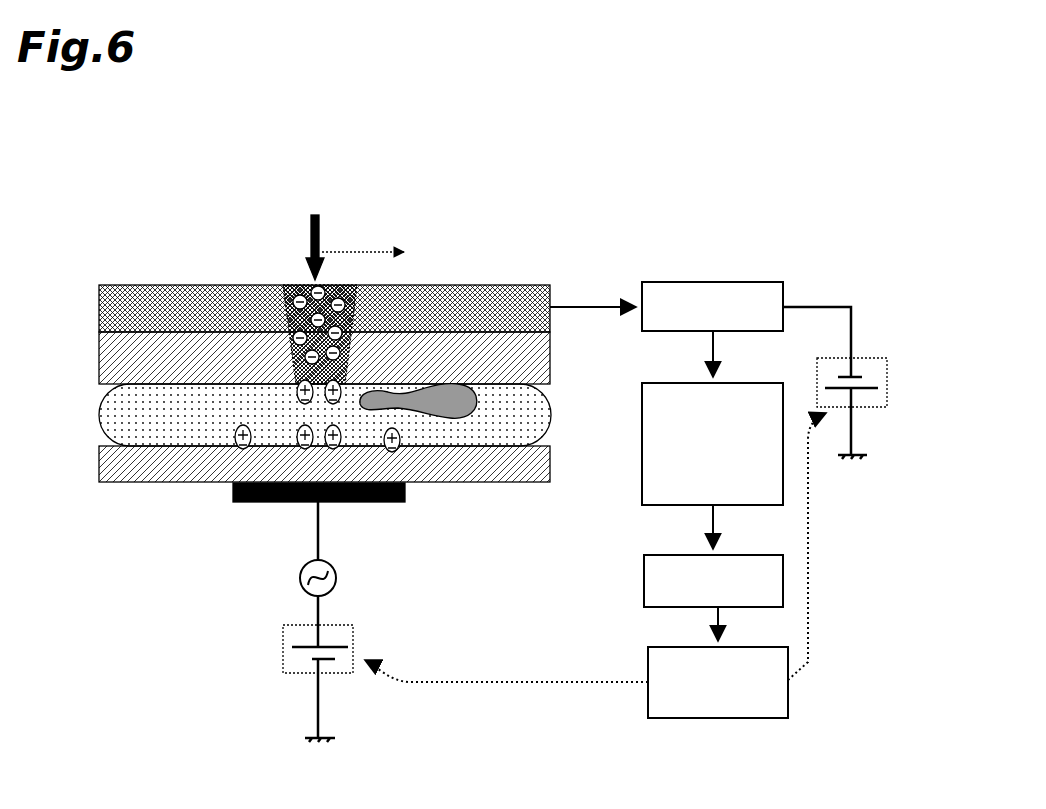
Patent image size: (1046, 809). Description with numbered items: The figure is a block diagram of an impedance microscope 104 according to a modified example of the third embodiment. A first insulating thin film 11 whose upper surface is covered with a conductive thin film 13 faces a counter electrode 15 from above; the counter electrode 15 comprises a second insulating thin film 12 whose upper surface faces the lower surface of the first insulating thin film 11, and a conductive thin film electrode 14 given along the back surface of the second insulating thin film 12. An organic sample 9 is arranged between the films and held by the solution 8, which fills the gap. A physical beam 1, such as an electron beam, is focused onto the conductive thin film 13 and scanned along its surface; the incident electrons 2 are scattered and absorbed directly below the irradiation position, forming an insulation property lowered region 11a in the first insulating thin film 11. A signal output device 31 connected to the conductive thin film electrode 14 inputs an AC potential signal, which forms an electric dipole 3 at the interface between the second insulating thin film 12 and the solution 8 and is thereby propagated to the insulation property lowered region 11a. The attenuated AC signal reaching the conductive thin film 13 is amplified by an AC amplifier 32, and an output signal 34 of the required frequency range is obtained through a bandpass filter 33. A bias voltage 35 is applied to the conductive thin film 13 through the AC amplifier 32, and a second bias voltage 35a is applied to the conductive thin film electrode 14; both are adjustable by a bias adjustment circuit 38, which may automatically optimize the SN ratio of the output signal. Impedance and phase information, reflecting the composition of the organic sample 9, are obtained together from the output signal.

The physical beam 1 is at (310, 245).
The incident electrons 2 is at (297, 296).
The electric dipole 3 is at (393, 454).
The solution 8 is at (103, 412).
The organic sample 9 is at (455, 420).
The first insulating thin film 11 is at (100, 357).
The insulation property lowered region 11a is at (370, 350).
The second insulating thin film 12 is at (217, 485).
The conductive thin film 13 is at (146, 285).
The conductive thin film electrode 14 is at (264, 503).
The counter electrode 15 is at (195, 495).
The signal output device 31 is at (337, 578).
The AC amplifier 32 is at (666, 329).
The bandpass filter 33 is at (712, 466).
The output signal 34 is at (713, 598).
The bias voltage 35 is at (860, 391).
The second bias voltage 35a is at (312, 662).
The bias adjustment circuit 38 is at (595, 565).
The impedance microscope 104 is at (640, 256).